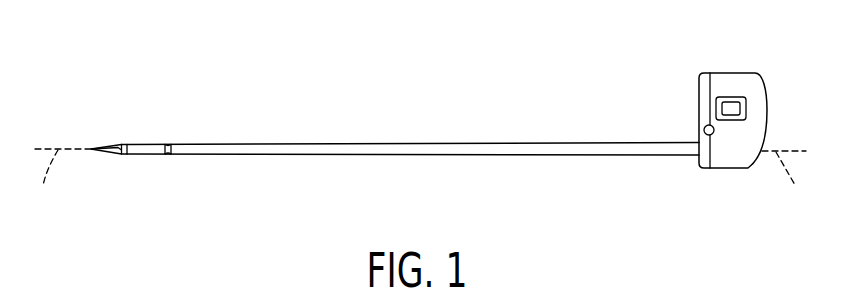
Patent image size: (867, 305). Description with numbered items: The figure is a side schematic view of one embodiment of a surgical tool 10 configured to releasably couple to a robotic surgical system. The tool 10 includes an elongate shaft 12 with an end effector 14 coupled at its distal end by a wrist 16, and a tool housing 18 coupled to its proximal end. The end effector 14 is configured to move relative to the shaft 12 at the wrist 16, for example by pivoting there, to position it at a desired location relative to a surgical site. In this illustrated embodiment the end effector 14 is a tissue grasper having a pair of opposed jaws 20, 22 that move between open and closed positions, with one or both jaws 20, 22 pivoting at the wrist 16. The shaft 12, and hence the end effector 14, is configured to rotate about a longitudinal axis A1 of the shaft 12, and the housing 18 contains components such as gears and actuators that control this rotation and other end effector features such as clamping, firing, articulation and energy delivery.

The surgical tool 10 is at (488, 82).
The elongate shaft 12 is at (423, 142).
The end effector 14 is at (100, 168).
The wrist 16 is at (122, 145).
The tool housing 18 is at (716, 72).
The jaw 20 is at (102, 147).
The jaw 22 is at (105, 157).
The longitudinal axis A1 is at (420, 186).